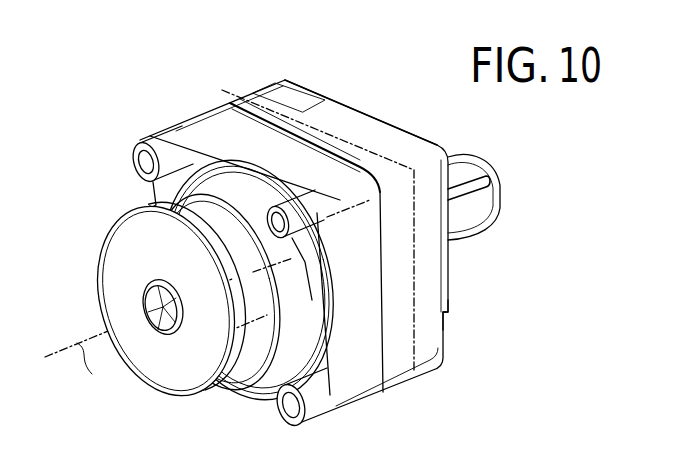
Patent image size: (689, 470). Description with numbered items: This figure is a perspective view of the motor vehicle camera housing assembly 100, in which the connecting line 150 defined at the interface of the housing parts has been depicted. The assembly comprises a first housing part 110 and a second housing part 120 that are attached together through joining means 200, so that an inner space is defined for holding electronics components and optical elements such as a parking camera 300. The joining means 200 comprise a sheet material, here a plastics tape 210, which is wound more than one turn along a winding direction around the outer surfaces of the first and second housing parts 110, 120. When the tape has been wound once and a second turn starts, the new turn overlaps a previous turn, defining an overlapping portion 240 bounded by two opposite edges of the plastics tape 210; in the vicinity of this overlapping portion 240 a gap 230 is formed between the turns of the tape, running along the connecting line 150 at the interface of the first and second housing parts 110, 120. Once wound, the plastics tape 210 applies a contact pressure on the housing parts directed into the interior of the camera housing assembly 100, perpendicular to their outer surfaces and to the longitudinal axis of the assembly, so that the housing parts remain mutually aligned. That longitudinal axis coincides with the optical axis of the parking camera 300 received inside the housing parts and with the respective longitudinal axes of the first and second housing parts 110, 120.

The motor vehicle camera housing assembly 100 is at (304, 223).
The first housing part 110 is at (172, 128).
The second housing part 120 is at (452, 294).
The connecting line 150 is at (420, 270).
The joining means 200 is at (233, 84).
The plastics tape 210 is at (277, 92).
The gap 230 is at (317, 97).
The overlapping portion 240 is at (358, 121).
The parking camera 300 is at (120, 295).